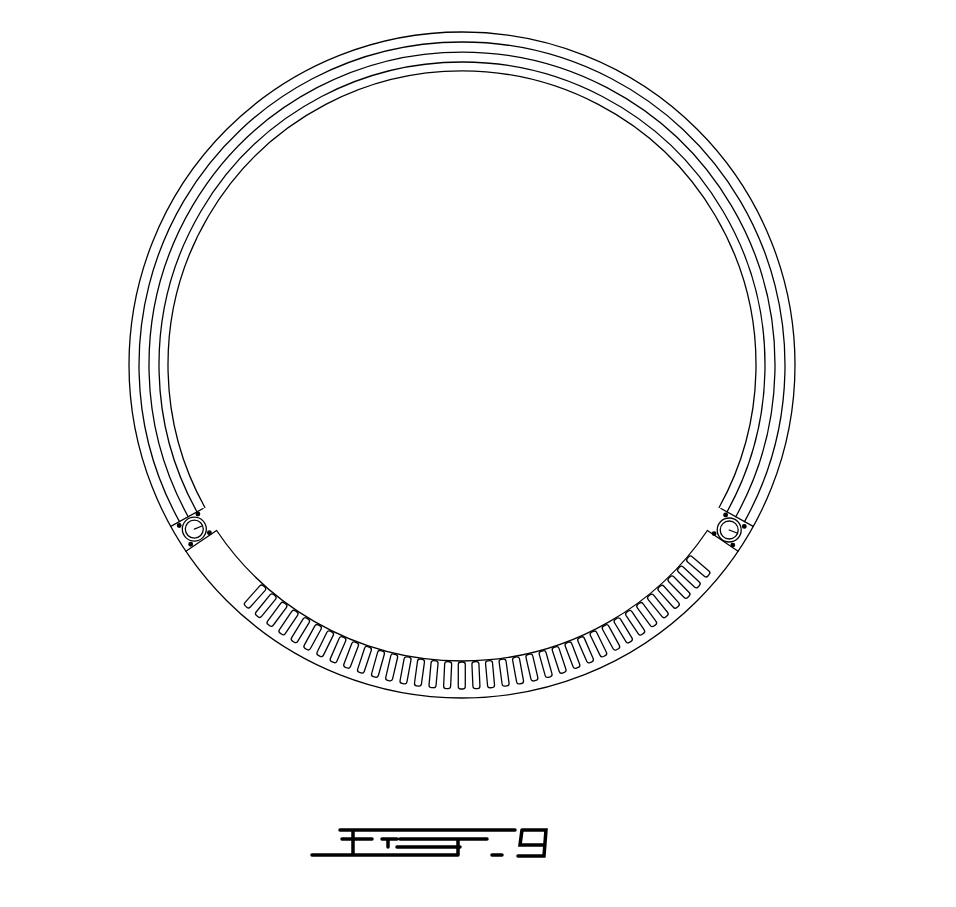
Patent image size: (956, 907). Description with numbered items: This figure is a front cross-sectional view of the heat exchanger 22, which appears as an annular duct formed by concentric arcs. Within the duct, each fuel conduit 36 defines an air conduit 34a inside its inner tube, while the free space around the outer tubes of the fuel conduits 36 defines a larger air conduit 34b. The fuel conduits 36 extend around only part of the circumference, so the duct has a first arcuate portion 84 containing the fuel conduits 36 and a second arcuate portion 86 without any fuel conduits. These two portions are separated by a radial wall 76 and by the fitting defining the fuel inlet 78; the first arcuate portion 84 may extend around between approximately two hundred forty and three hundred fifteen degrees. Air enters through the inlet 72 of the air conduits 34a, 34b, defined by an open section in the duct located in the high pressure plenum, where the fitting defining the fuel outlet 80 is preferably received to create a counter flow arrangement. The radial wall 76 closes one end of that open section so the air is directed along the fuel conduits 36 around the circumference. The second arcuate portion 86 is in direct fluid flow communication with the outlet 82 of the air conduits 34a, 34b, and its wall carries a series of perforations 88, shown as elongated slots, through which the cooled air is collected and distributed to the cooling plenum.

The heat exchanger 22 is at (122, 100).
The first arcuate portion 84 is at (146, 241).
The fuel conduit 36 is at (147, 363).
The air conduit 34a is at (760, 414).
The larger air conduit 34b is at (743, 453).
The inlet of the air conduits 72 is at (222, 570).
The outlet of the air conduits 82 is at (712, 545).
The fuel inlet 78 is at (742, 530).
The fuel outlet 80 is at (203, 523).
The radial wall 76 is at (245, 596).
The second arcuate portion 86 is at (598, 683).
The perforations 88 is at (425, 658).